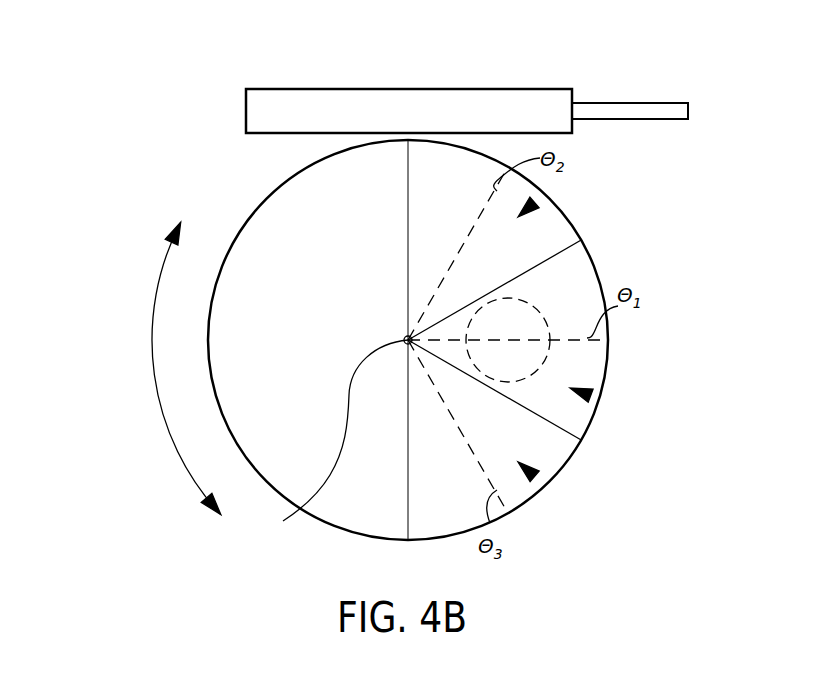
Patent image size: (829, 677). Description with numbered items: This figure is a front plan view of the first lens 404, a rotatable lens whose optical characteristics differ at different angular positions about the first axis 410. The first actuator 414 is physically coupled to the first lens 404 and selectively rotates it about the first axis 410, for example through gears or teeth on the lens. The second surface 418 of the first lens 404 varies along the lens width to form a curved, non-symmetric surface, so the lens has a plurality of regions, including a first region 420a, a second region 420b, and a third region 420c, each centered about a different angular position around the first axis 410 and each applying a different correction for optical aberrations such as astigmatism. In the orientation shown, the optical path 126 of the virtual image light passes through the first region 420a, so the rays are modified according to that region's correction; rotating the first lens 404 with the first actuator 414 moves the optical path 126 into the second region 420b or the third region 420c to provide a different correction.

The first actuator 414 is at (333, 88).
The second surface 418 is at (288, 213).
The first axis 410 is at (327, 439).
The first lens 404 is at (157, 457).
The optical path 126 is at (532, 352).
The first region 420a is at (541, 202).
The second region 420b is at (590, 396).
The third region 420c is at (535, 477).